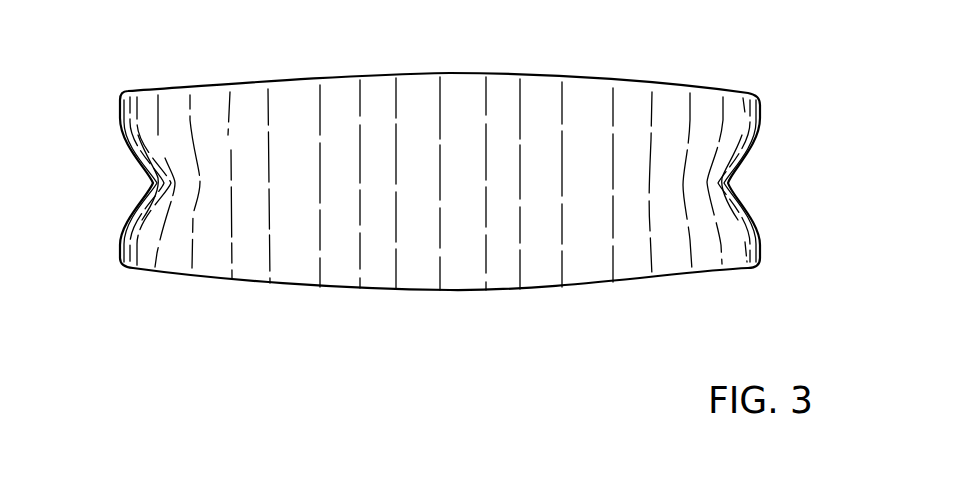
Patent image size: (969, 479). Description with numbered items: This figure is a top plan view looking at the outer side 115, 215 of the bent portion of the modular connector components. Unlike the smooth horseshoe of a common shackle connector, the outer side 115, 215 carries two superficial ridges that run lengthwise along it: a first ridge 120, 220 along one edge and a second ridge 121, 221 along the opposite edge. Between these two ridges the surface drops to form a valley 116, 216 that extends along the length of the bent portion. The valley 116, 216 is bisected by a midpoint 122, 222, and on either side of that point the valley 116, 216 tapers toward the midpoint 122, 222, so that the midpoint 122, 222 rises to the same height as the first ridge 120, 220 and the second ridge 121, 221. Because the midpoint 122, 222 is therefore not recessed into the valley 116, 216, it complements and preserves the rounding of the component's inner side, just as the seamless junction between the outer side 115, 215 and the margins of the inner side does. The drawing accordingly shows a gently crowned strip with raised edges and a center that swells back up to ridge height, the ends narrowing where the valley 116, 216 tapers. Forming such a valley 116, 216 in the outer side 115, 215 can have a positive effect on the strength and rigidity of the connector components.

The outer side 115 is at (440, 237).
The outer side 215 is at (388, 316).
The valley 116 is at (444, 183).
The valley 216 is at (728, 184).
The first ridge 120 is at (720, 201).
The first ridge 220 is at (713, 243).
The second ridge 121 is at (162, 162).
The second ridge 221 is at (150, 127).
The midpoint 122 is at (441, 156).
The midpoint 222 is at (395, 163).